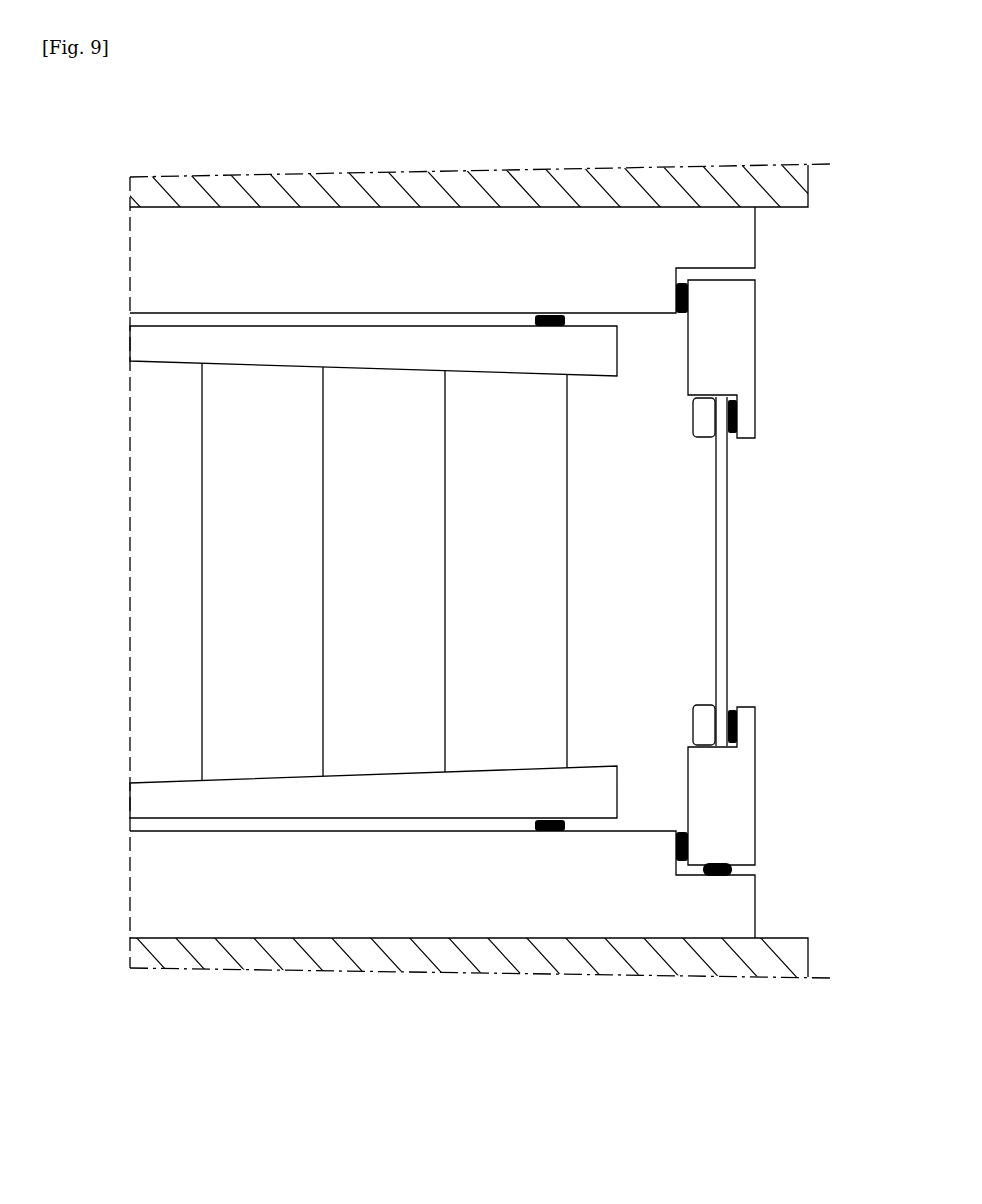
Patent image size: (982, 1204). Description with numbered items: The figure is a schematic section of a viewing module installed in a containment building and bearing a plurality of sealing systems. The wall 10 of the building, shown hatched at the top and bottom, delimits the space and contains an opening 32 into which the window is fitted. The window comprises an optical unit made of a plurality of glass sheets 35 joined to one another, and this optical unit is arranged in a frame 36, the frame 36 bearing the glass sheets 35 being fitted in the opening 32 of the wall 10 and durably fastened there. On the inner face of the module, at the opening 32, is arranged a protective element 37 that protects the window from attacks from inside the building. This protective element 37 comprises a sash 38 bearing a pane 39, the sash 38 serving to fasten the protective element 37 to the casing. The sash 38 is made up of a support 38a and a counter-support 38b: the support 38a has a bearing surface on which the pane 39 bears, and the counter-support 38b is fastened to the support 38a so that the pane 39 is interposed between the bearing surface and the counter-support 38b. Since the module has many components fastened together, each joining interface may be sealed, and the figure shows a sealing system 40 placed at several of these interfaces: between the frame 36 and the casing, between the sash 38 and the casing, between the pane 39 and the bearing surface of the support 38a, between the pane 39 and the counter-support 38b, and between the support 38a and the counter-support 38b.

The wall 10 is at (440, 225).
The opening 32 is at (634, 692).
The glass sheet 35 is at (483, 742).
The frame 36 is at (381, 806).
The protective element 37 is at (746, 562).
The sash 38 is at (735, 562).
The support 38a is at (742, 303).
The counter-support 38b is at (702, 411).
The pane 39 is at (722, 553).
The sealing system 40 is at (543, 300).